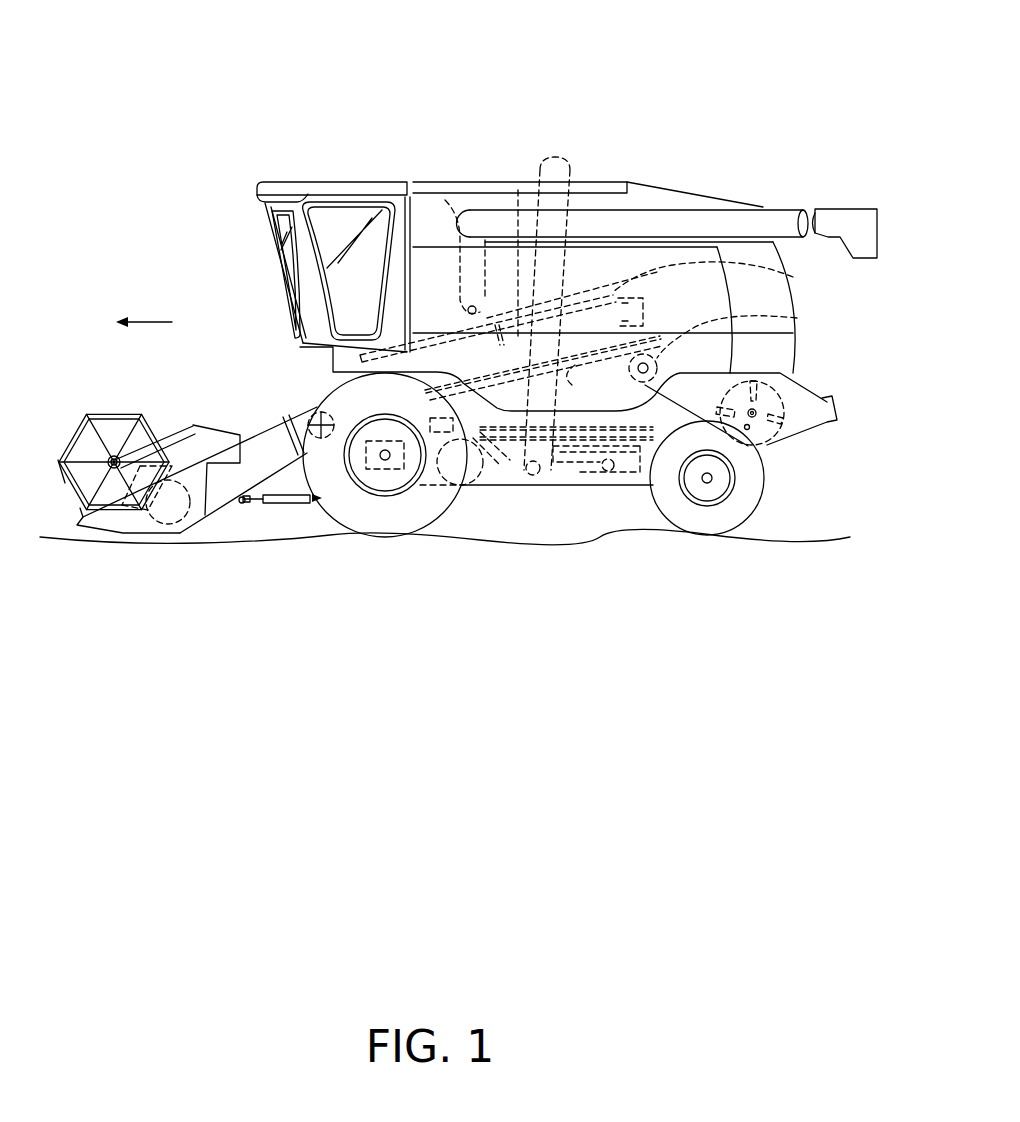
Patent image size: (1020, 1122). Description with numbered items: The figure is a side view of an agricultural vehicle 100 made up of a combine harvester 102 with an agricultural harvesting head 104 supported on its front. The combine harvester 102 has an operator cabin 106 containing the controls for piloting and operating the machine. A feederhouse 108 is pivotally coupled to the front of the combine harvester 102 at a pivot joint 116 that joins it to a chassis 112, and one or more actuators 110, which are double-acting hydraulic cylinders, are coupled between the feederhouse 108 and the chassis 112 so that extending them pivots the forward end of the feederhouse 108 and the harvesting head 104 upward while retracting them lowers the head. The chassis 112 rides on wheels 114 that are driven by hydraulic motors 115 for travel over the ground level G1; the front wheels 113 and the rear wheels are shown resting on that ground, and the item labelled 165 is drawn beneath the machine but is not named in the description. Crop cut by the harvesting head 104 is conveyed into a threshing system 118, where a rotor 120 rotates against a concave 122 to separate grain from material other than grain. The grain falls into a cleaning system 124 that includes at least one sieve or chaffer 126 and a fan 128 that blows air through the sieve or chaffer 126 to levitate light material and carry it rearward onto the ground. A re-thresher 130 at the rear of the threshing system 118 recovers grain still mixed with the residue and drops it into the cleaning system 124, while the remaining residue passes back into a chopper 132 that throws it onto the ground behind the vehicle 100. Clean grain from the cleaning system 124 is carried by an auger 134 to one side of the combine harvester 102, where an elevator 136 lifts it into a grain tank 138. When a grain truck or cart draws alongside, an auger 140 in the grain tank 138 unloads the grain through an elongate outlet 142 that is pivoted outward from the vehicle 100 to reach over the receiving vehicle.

The agricultural vehicle 100 is at (545, 66).
The combine harvester 102 is at (591, 183).
The agricultural harvesting head 104 is at (150, 545).
The operator cabin 106 is at (298, 182).
The feederhouse 108 is at (243, 412).
The actuators 110 is at (285, 506).
The chassis 112 is at (500, 486).
The front wheels 113 is at (340, 522).
The wheels 114 is at (757, 519).
The hydraulic motors 115 is at (387, 478).
The pivot joint 116 is at (318, 410).
The threshing system 118 is at (605, 284).
The rotor 120 is at (793, 277).
The concave 122 is at (572, 385).
The cleaning system 124 is at (632, 498).
The sieve or chaffer 126 is at (600, 445).
The fan 128 is at (455, 500).
The re-thresher 130 is at (797, 318).
The chopper 132 is at (778, 440).
The auger 134 is at (577, 445).
The elevator 136 is at (518, 190).
The grain tank 138 is at (486, 182).
The auger 140 is at (445, 200).
The elongate outlet 142 is at (660, 195).
The controller 165 is at (403, 480).
The ground level G1 is at (787, 546).